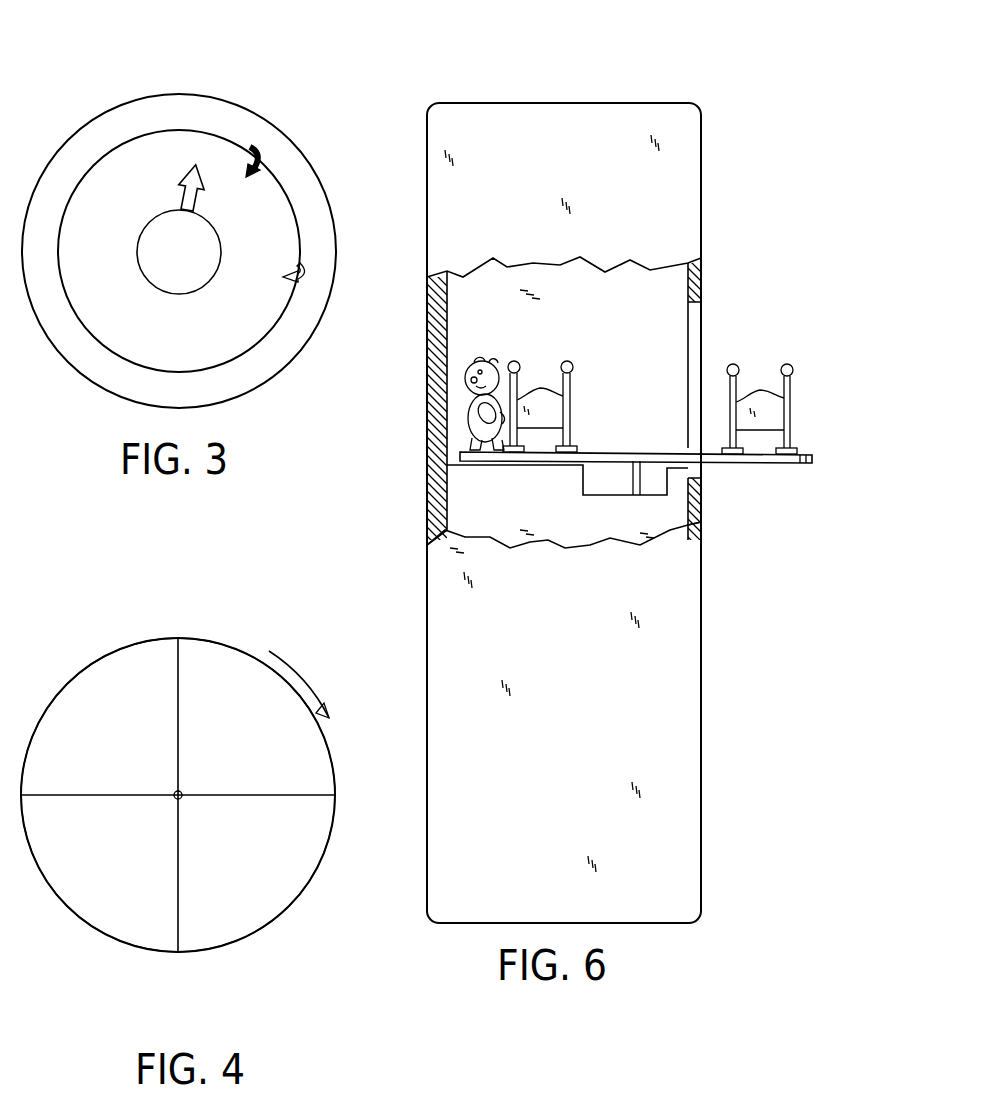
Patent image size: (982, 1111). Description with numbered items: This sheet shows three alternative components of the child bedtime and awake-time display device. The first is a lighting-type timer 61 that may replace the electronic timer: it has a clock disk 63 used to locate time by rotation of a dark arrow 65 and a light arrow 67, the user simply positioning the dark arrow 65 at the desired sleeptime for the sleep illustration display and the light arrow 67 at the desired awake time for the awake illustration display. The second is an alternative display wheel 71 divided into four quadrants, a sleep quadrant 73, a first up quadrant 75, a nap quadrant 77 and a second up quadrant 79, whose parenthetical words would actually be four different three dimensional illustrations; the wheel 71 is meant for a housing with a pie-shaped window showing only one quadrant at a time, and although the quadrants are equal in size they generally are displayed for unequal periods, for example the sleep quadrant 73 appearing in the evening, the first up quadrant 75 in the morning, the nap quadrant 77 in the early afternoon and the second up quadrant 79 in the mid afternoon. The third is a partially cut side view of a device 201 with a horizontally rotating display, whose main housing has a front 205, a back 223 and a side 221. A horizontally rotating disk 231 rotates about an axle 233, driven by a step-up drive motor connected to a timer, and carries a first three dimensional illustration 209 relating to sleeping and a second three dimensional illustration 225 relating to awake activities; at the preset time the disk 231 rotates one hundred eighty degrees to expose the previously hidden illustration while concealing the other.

In FIG. 3, the timer 61 is at (87, 91).
In FIG. 3, the clock disk 63 is at (90, 330).
In FIG. 3, the dark arrow 65 is at (258, 158).
In FIG. 3, the light arrow 67 is at (300, 275).
In FIG. 4, the display wheel 71 is at (316, 876).
In FIG. 4, the sleep quadrant 73 is at (213, 652).
In FIG. 4, the up-1 quadrant 75 is at (262, 919).
In FIG. 4, the nap quadrant 77 is at (77, 900).
In FIG. 4, the up-2 quadrant 79 is at (72, 688).
In FIG. 6, the device 201 is at (679, 66).
In FIG. 6, the front 205 is at (702, 660).
In FIG. 6, the first three dimensional illustration 209 is at (757, 390).
In FIG. 6, the side 221 is at (695, 185).
In FIG. 6, the back 223 is at (426, 460).
In FIG. 6, the second three dimensional illustration 225 is at (498, 366).
In FIG. 6, the horizontally rotating disk 231 is at (594, 447).
In FIG. 6, the axle 233 is at (628, 480).